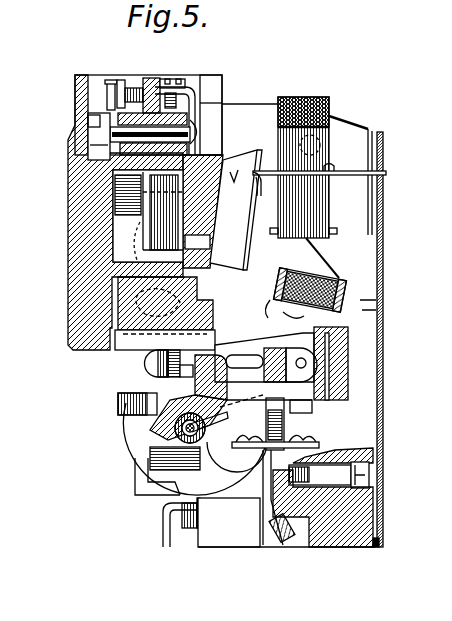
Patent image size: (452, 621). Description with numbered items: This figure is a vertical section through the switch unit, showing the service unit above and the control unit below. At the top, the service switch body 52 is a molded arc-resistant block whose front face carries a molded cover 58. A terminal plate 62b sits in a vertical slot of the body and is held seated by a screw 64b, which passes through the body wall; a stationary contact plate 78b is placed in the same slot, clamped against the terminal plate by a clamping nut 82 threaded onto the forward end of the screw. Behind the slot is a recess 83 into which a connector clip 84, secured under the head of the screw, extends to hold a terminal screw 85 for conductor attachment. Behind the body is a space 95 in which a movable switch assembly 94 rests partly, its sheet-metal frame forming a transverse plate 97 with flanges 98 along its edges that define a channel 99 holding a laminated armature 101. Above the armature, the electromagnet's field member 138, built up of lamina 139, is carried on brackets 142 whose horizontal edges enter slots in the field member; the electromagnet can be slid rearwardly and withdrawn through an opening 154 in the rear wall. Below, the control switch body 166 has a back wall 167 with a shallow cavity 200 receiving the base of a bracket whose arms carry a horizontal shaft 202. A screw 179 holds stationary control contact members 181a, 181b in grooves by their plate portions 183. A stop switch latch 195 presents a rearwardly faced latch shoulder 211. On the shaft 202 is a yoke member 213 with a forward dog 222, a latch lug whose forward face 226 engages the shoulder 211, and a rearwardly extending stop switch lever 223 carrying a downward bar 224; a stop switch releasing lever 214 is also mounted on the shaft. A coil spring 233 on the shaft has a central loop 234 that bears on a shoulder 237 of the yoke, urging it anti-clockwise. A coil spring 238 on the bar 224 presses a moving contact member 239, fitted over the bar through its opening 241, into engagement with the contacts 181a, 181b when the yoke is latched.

The service switch body 52 is at (138, 77).
The molded cover 58 is at (82, 245).
The terminal plate 62b is at (112, 78).
The screw 64b is at (128, 132).
The stationary contact plate 78b is at (103, 163).
The clamping nut 82 is at (97, 118).
The recess 83 is at (158, 78).
The connector clip 84 is at (192, 80).
The terminal screw 85 is at (177, 78).
The movable switch assembly 94 is at (237, 168).
The space 95 is at (349, 247).
The transverse wall or plate 97 is at (303, 318).
The flanges 98 is at (359, 296).
The channel 99 is at (276, 282).
The laminated armature 101 is at (336, 278).
The field member 138 is at (333, 250).
The lamina 139 is at (312, 100).
The bracket 142 is at (352, 140).
The opening 154 is at (390, 160).
The control switch body 166 is at (342, 533).
The back wall 167 is at (355, 357).
The screw 179 is at (366, 455).
The stationary control contact member 181a is at (190, 470).
The stationary control contact member 181b is at (305, 452).
The plate portion 183 is at (259, 502).
The stop switch latch 195 is at (383, 308).
The shallow cavity 200 is at (350, 340).
The shaft 202 is at (197, 463).
The latch shoulder 211 is at (148, 364).
The yoke member 213 is at (140, 400).
The stop switch releasing lever 214 is at (192, 540).
The projection or dog 222 is at (185, 398).
The stop switch lever 223 is at (355, 380).
The bar 224 is at (325, 398).
The forward face 226 is at (208, 383).
The coil spring 233 is at (178, 440).
The central loop 234 is at (173, 425).
The shoulder 237 is at (182, 380).
The coil spring 238 is at (290, 415).
The moving contact member 239 is at (301, 428).
The opening 241 is at (250, 445).